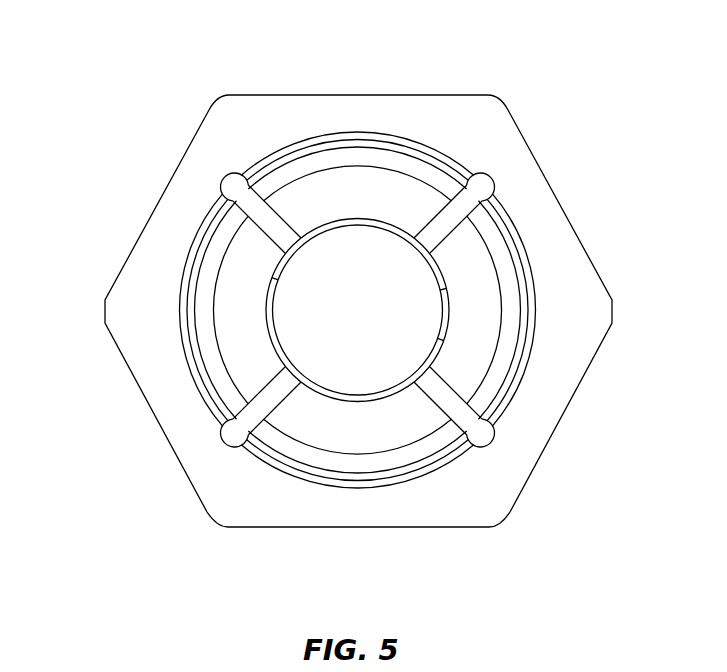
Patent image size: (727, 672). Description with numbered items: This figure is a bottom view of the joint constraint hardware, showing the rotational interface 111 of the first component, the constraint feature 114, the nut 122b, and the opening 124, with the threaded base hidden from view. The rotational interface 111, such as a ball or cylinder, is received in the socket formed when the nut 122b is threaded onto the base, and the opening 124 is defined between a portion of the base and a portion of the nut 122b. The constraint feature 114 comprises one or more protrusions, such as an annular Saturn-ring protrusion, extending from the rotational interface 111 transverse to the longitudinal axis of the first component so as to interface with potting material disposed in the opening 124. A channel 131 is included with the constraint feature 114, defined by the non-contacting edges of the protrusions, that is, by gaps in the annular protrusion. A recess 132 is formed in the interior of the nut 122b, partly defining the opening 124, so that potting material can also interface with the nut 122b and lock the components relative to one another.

The rotational interface 111 is at (436, 307).
The constraint feature 114 is at (217, 337).
The nut 122b is at (177, 168).
The opening 124 is at (422, 168).
The channel 131 is at (258, 213).
The recess 132 is at (233, 183).